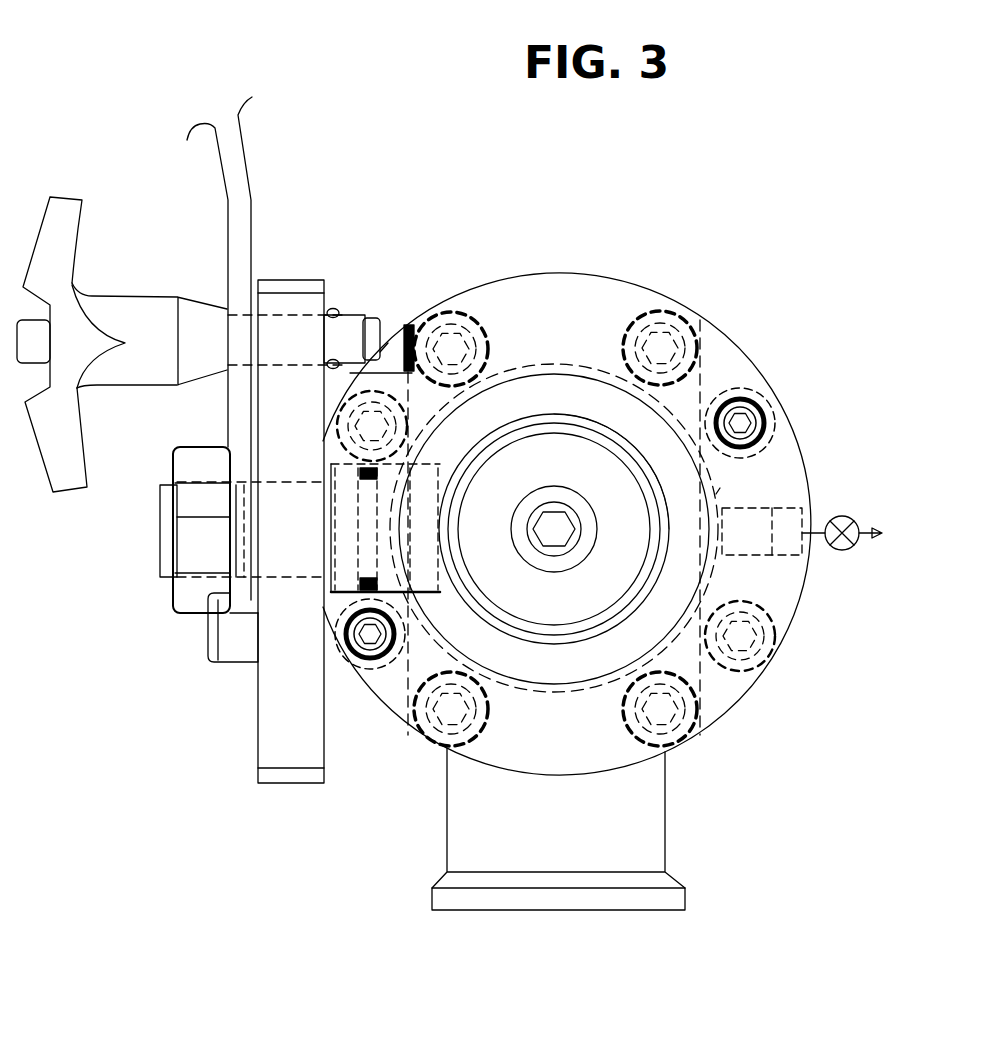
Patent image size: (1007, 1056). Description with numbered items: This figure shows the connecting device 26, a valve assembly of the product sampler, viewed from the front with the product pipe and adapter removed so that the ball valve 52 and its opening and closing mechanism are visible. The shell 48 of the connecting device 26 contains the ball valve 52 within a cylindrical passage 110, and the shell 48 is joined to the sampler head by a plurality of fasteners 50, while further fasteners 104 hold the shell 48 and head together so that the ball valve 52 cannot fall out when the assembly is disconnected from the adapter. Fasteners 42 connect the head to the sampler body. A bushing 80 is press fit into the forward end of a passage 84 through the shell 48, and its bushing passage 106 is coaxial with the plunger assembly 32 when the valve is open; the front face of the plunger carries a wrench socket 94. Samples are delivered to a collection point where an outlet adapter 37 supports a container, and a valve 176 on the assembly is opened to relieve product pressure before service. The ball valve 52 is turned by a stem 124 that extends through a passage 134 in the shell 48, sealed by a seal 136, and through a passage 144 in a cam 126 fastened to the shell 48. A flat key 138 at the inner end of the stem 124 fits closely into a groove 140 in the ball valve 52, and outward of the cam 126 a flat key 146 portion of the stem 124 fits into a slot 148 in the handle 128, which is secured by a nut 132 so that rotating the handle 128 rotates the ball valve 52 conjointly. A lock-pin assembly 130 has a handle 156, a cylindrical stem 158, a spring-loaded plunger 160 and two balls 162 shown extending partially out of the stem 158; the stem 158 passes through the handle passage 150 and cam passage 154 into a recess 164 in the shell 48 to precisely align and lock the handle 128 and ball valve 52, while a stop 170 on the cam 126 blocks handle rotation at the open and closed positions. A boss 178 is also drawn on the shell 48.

The connecting device 26 is at (592, 193).
The plunger assembly 32 is at (570, 474).
The outlet adapter 37 is at (645, 850).
The fasteners 42 is at (378, 428).
The shell 48 is at (718, 325).
The fasteners 50 is at (456, 343).
The ball valve 52 is at (657, 628).
The bushing 80 is at (650, 594).
The passage 84 is at (665, 555).
The wrench socket 94 is at (548, 536).
The fasteners 104 is at (742, 425).
The bushing passage 106 is at (615, 605).
The cylindrical passage 110 is at (720, 488).
The stem 124 is at (165, 570).
The cam 126 is at (273, 747).
The handle 128 is at (243, 147).
The lock-pin assembly 130 is at (106, 240).
The nut 132 is at (183, 615).
The passage 134 is at (333, 565).
The seal 136 is at (373, 473).
The flat key 138 is at (430, 541).
The groove 140 is at (430, 516).
The passage 144 is at (271, 483).
The flat key portion 146 is at (243, 517).
The slot 148 is at (258, 563).
The handle passage 150 is at (236, 318).
The cam passage 154 is at (286, 313).
The handle 156 is at (68, 200).
The cylindrical stem 158 is at (378, 320).
The plunger 160 is at (30, 366).
The balls 162 is at (353, 343).
The recess 164 is at (388, 343).
The stop 170 is at (233, 652).
The valve 176 is at (848, 516).
The boss 178 is at (786, 518).